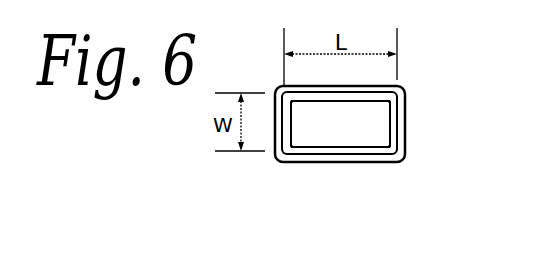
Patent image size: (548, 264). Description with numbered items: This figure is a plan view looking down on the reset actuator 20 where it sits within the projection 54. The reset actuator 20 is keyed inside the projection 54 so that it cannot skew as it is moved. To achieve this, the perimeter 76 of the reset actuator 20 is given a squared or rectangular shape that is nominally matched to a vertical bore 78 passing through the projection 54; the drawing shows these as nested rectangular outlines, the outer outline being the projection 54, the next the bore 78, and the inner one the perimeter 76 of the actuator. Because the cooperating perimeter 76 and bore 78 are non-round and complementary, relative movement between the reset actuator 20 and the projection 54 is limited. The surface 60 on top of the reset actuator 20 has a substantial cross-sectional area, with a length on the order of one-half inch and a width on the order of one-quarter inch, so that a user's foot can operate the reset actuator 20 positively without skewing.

The reset actuator 20 is at (327, 130).
The projection 54 is at (360, 162).
The surface 60 is at (303, 108).
The perimeter 76 is at (355, 88).
The vertical bore 78 is at (352, 150).